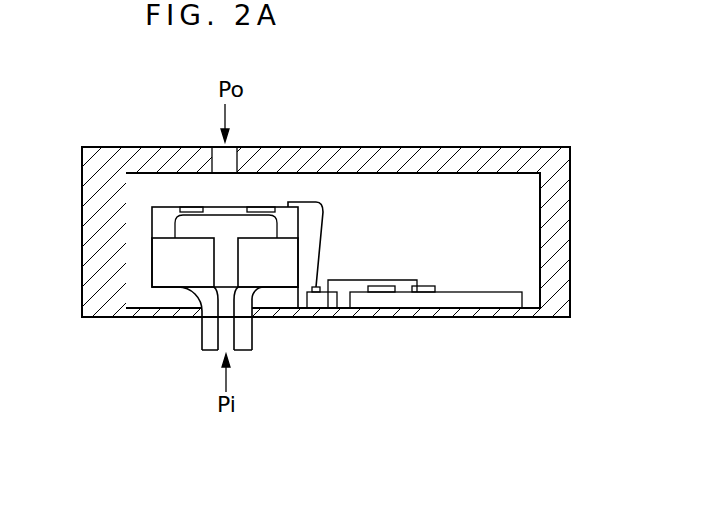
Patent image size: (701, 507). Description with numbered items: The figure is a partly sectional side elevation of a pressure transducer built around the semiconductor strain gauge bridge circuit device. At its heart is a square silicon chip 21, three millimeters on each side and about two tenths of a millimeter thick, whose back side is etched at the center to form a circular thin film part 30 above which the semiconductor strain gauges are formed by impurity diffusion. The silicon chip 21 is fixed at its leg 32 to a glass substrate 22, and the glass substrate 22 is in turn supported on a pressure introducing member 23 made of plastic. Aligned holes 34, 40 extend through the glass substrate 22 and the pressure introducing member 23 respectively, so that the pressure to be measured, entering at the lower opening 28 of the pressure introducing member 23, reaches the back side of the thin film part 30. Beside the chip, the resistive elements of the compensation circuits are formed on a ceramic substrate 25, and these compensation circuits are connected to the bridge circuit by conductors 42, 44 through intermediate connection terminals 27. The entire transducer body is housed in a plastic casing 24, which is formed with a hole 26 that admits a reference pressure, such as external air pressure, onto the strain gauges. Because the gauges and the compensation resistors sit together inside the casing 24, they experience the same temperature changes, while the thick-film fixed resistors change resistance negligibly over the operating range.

The silicon chip 21 is at (162, 207).
The glass substrate 22 is at (165, 270).
The pressure introducing member 23 is at (194, 304).
The plastic casing 24 is at (105, 302).
The ceramic substrate 25 is at (461, 298).
The hole 26 is at (230, 147).
The intermediate connection terminals 27 is at (332, 300).
The inlet opening 28 is at (230, 349).
The thin film part 30 is at (226, 207).
The leg 32 is at (162, 225).
The hole 34 is at (228, 268).
The hole 40 is at (228, 332).
The conductor 42 is at (315, 202).
The conductor 44 is at (350, 280).